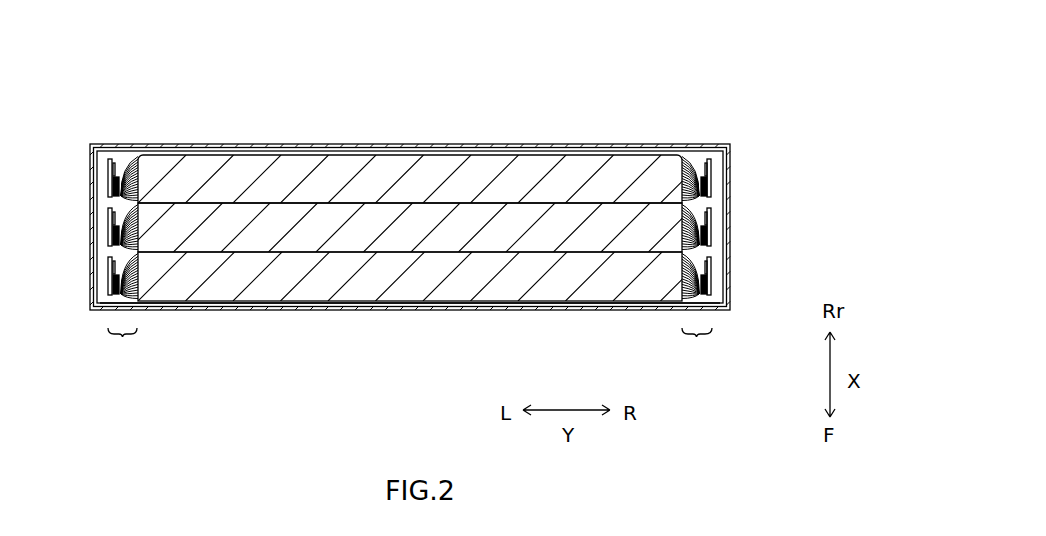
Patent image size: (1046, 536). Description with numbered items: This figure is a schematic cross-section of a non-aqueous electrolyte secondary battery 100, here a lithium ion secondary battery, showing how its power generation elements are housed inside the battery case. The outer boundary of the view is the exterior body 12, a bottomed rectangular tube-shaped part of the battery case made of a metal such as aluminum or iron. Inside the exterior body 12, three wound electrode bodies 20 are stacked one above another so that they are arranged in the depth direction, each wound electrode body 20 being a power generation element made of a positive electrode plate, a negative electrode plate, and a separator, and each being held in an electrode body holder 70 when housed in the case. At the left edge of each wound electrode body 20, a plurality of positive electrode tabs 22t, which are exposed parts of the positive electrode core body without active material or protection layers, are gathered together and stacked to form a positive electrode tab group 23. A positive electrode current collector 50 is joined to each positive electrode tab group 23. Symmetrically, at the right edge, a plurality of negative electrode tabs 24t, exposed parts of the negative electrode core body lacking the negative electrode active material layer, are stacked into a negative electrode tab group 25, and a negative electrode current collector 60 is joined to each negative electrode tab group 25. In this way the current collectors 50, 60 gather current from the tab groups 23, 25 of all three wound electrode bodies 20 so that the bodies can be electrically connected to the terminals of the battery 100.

The non-aqueous electrolyte secondary battery 100 is at (660, 72).
The exterior body 12 is at (551, 137).
The wound electrode body 20 is at (341, 270).
The positive electrode tab 22t is at (123, 160).
The negative electrode tab 24t is at (697, 160).
The positive electrode tab group 23 is at (122, 349).
The negative electrode tab group 25 is at (697, 349).
The positive electrode current collector 50 is at (108, 260).
The negative electrode current collector 60 is at (767, 260).
The electrode body holder 70 is at (270, 303).